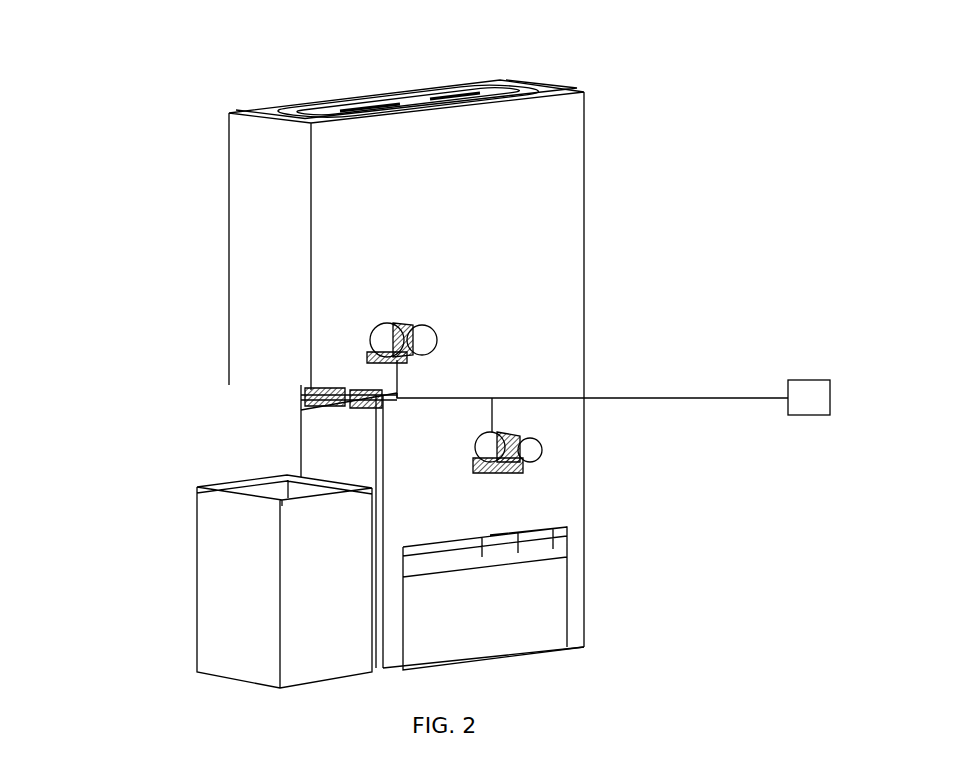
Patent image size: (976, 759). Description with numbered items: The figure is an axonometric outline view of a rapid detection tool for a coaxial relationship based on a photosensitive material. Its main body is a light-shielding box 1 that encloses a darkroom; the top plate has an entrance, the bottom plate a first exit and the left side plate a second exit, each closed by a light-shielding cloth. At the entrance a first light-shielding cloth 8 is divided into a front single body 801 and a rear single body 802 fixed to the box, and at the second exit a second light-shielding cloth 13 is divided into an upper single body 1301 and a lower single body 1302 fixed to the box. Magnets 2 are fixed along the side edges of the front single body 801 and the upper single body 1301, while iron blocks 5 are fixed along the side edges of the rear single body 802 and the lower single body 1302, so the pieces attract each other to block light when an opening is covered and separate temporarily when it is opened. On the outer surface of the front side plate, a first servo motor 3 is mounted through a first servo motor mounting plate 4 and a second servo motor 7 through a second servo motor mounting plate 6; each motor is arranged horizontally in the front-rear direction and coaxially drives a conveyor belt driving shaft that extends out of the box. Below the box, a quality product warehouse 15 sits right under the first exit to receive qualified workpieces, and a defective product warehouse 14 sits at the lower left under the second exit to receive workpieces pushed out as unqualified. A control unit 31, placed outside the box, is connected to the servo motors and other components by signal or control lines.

The light-shielding box 1 is at (462, 235).
The magnets 2 is at (393, 395).
The first servo motor 3 is at (530, 440).
The first servo motor mounting plate 4 is at (513, 468).
The iron blocks 5 is at (393, 393).
The second servo motor mounting plate 6 is at (377, 355).
The second servo motor 7 is at (377, 318).
The first light-shielding cloth 8 is at (510, 80).
The front single body of the first light-shielding cloth 801 is at (367, 103).
The rear single body of the first light-shielding cloth 802 is at (347, 100).
The second light-shielding cloth 13 is at (340, 406).
The upper single body of the second light-shielding cloth 1301 is at (330, 398).
The lower single body of the second light-shielding cloth 1302 is at (360, 404).
The defective product warehouse 14 is at (245, 577).
The quality product warehouse 15 is at (487, 615).
The control unit 31 is at (807, 403).